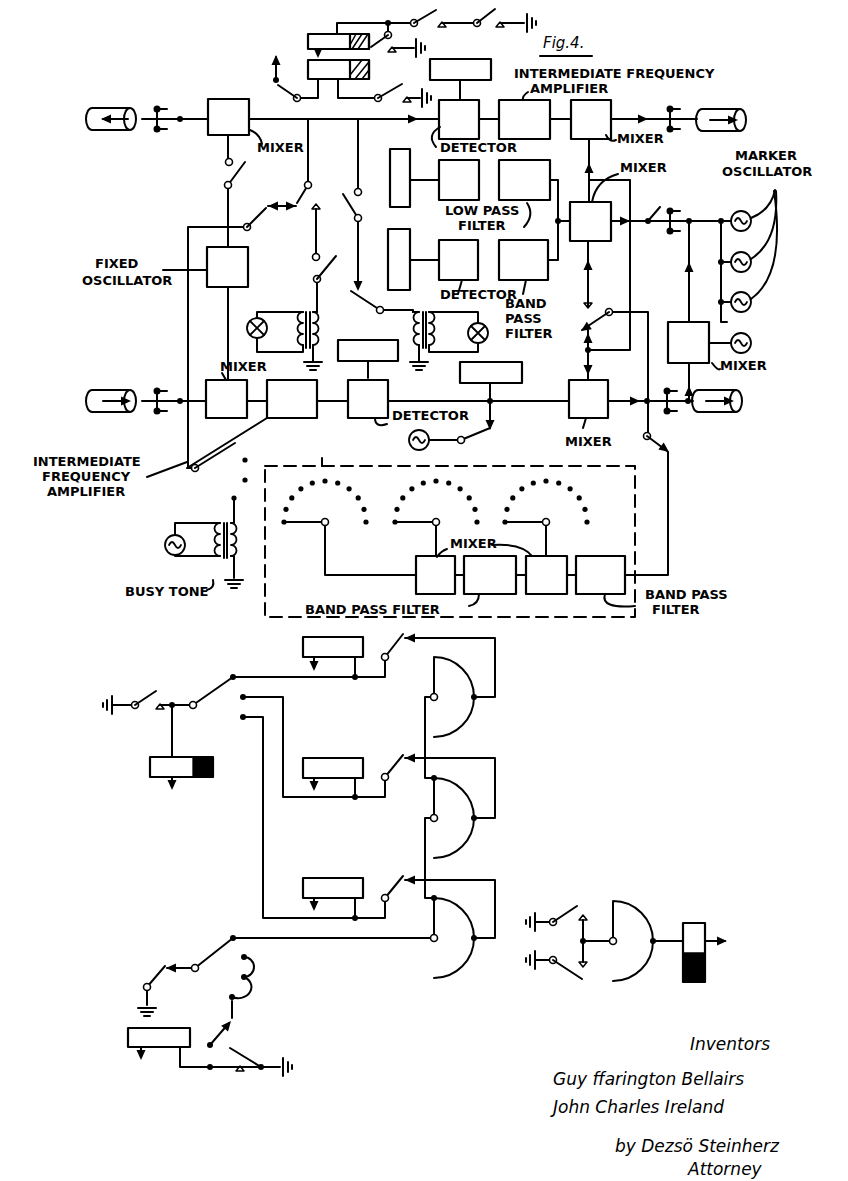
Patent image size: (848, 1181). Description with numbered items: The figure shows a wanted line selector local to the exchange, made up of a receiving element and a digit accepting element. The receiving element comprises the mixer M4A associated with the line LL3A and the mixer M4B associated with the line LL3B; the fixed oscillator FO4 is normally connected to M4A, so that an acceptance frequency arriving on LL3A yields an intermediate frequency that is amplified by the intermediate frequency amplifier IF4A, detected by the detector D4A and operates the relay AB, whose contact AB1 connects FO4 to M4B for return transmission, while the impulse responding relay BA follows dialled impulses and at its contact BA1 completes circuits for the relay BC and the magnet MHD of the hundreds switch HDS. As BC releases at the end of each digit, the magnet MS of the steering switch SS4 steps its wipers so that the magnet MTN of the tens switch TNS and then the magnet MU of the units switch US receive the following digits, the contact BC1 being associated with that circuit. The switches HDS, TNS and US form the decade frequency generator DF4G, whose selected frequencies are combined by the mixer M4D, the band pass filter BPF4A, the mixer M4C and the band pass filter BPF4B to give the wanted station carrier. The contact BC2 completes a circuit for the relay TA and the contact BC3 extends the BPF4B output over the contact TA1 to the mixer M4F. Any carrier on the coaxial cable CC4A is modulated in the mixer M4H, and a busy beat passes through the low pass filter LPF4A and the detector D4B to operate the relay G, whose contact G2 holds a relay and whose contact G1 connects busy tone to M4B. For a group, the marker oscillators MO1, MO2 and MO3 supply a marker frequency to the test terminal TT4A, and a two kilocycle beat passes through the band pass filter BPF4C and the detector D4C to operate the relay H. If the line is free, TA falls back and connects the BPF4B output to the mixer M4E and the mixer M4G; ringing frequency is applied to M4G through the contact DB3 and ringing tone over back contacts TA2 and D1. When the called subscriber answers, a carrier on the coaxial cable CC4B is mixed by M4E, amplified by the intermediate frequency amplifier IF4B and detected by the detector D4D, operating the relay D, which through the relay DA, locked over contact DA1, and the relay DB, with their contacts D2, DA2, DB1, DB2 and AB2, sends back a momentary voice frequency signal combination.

The line LL3B is at (111, 108).
The mixer M4B is at (228, 117).
The contact AB1 of relay AB AB1 is at (191, 575).
The fixed oscillator FO4 is at (227, 267).
The back contact TA2 of relay TA TA2 is at (262, 207).
The back contact D1 of relay D D1 is at (306, 172).
The contact DA1 of relay DA DA1 is at (338, 258).
The contact G1 of relay G G1 is at (363, 216).
The relay DB is at (337, 32).
The relay DA is at (351, 71).
The contact DB1 of relay DB DB1 is at (272, 85).
The contact D2 of relay D D2 is at (403, 100).
The contact DA2 of relay DA DA2 is at (399, 42).
The contact DB2 of relay DB DB2 is at (441, 13).
The contact AB2 of relay AB AB2 is at (504, 27).
The relay D is at (467, 69).
The detector D4D is at (459, 119).
The intermediate frequency amplifier IF4B is at (524, 119).
The mixer M4E is at (591, 119).
The coaxial cable CC4B is at (721, 110).
The relay G is at (400, 168).
The detector D4B is at (459, 180).
The low pass filter LPF4A is at (524, 180).
The relay H is at (399, 249).
The detector D4C is at (458, 260).
The band pass filter BPF4C is at (523, 260).
The mixer M4F is at (590, 221).
The test terminal TT4A is at (662, 212).
The marker oscillator MO1 is at (750, 210).
The marker oscillator MO2 is at (750, 231).
The marker oscillator MO3 is at (751, 251).
The mixer M4H is at (709, 342).
The contact TA1 of relay TA TA1 is at (585, 317).
The relay AB is at (368, 340).
The impulse responding relay BA is at (504, 373).
The line LL3A is at (111, 390).
The mixer M4A is at (226, 399).
The intermediate frequency amplifier IF4A is at (292, 399).
The detector D4A is at (368, 399).
The contact DB3 of relay DB DB3 is at (466, 439).
The mixer M4G is at (588, 399).
The coaxial cable CC4A is at (717, 392).
The contact BC3 of relay BC BC3 is at (677, 447).
The steering switch SS4 is at (222, 721).
The decade frequency generator DFG4 DF4G is at (450, 530).
The units switch US is at (324, 501).
The tens switch TNS is at (435, 501).
The hundreds switch HDS is at (545, 501).
The mixer M4D is at (435, 575).
The band pass filter BPF4A is at (490, 575).
The mixer M4C is at (546, 575).
The band pass filter BPF4B is at (600, 575).
The magnet MHD of hundreds switch MHD is at (399, 677).
The magnet MTN of tens switch MTN is at (399, 798).
The magnet MU of units switch MU is at (479, 920).
The contact BA1 of relay BA BA1 is at (136, 692).
The relay BC is at (165, 765).
The magnet MS4 of steering switch MS is at (159, 1028).
The contact BC1 of relay BC BC1 is at (261, 1071).
The contact G2 of relay G G2 is at (556, 907).
The contact BC2 of relay BC BC2 is at (554, 971).
The relay TA is at (694, 943).